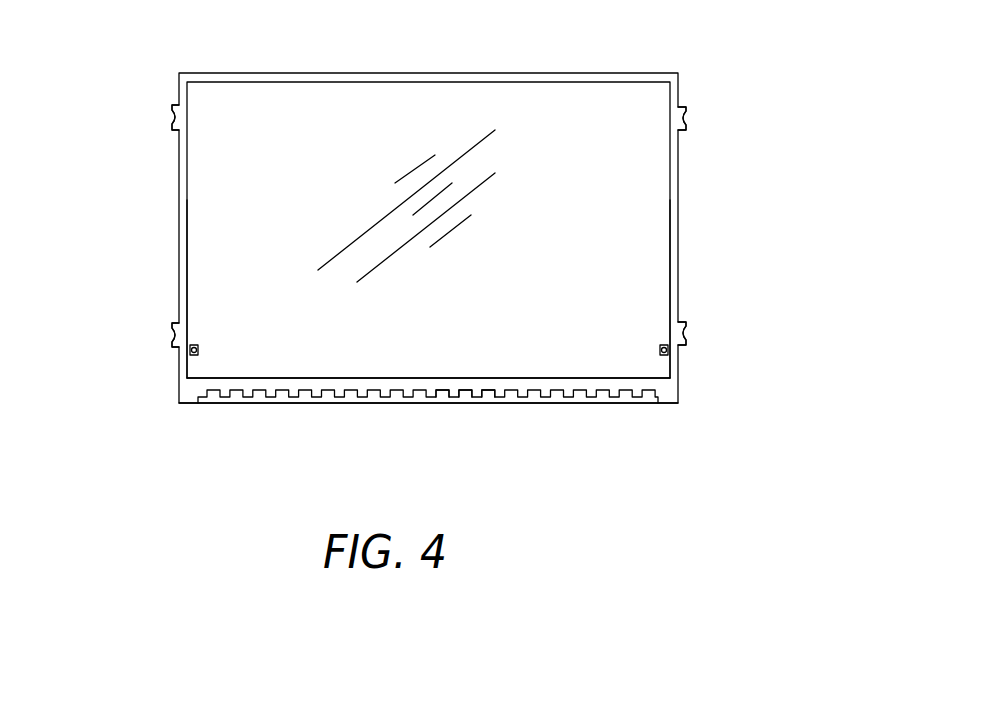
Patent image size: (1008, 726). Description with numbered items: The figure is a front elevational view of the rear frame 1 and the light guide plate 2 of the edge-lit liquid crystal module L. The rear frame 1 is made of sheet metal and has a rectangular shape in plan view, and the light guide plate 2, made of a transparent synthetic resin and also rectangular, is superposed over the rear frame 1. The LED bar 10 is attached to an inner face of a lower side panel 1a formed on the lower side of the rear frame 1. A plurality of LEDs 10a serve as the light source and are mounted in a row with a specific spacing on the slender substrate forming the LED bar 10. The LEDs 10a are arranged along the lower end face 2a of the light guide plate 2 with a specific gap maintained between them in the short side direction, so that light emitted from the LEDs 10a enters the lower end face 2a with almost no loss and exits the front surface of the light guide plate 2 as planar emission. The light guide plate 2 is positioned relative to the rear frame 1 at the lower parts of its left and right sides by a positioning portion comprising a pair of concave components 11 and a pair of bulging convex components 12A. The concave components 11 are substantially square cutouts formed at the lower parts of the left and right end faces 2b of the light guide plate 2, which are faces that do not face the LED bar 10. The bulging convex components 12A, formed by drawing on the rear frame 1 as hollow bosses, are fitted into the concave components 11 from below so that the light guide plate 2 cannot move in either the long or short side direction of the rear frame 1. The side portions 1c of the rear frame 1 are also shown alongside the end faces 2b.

The rear frame 1 is at (583, 72).
The lower side panel 1a is at (548, 404).
The side portion of housing 1c is at (178, 258).
The light guide plate 2 is at (648, 215).
The lower end face 2a is at (665, 380).
The left and right end faces 2b is at (187, 283).
The LED bar 10 is at (385, 392).
The LEDs 10a is at (477, 390).
The concave components 11 is at (198, 345).
The bulging convex components 12A is at (186, 352).
The liquid crystal module L is at (712, 82).